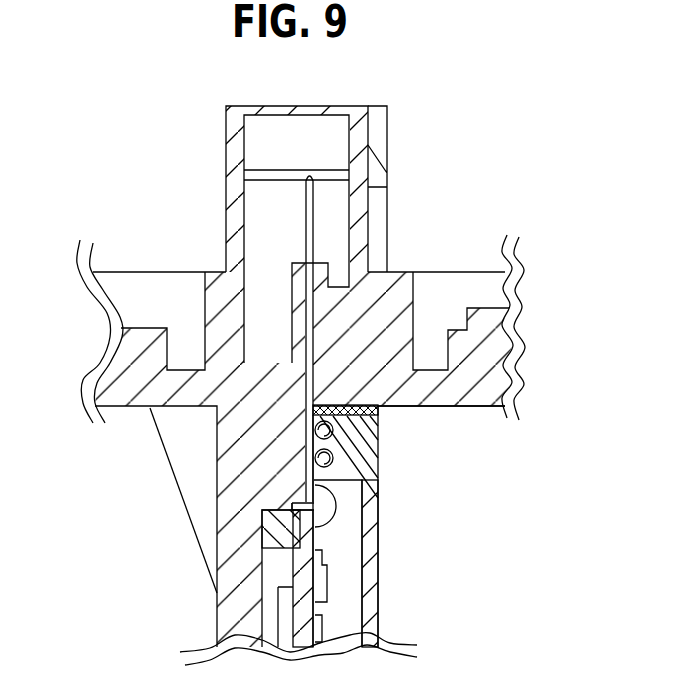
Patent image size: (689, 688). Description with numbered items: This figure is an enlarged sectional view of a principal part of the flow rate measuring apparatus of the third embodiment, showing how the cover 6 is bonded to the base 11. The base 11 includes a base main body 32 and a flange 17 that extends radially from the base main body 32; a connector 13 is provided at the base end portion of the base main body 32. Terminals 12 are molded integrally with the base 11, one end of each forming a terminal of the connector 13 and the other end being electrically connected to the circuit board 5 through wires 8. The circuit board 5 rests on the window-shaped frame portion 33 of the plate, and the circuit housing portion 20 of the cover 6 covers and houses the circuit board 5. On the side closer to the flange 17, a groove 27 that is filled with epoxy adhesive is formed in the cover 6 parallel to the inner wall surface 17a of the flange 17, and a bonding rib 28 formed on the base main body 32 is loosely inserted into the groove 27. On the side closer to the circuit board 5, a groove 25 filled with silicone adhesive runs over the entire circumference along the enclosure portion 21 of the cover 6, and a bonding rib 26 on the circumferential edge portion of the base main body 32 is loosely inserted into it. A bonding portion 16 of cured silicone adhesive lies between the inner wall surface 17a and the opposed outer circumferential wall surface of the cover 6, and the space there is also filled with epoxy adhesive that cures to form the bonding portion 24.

The circuit board 5 is at (258, 640).
The cover 6 is at (370, 560).
The wires 8 is at (338, 512).
The base 11 is at (217, 575).
The terminals 12 is at (397, 303).
The connector 13 is at (232, 157).
The bonding portion 16 is at (292, 507).
The flange 17 is at (487, 350).
The inner wall surface 17a is at (407, 412).
The circuit housing portion 20 is at (345, 599).
The enclosure portion 21 is at (355, 435).
The bonding portion 24 is at (380, 414).
The groove 25 is at (368, 483).
The bonding rib 26 is at (305, 452).
The groove 27 is at (368, 465).
The bonding rib 28 is at (305, 428).
The base main body 32 is at (300, 607).
The frame portion 33 is at (270, 533).